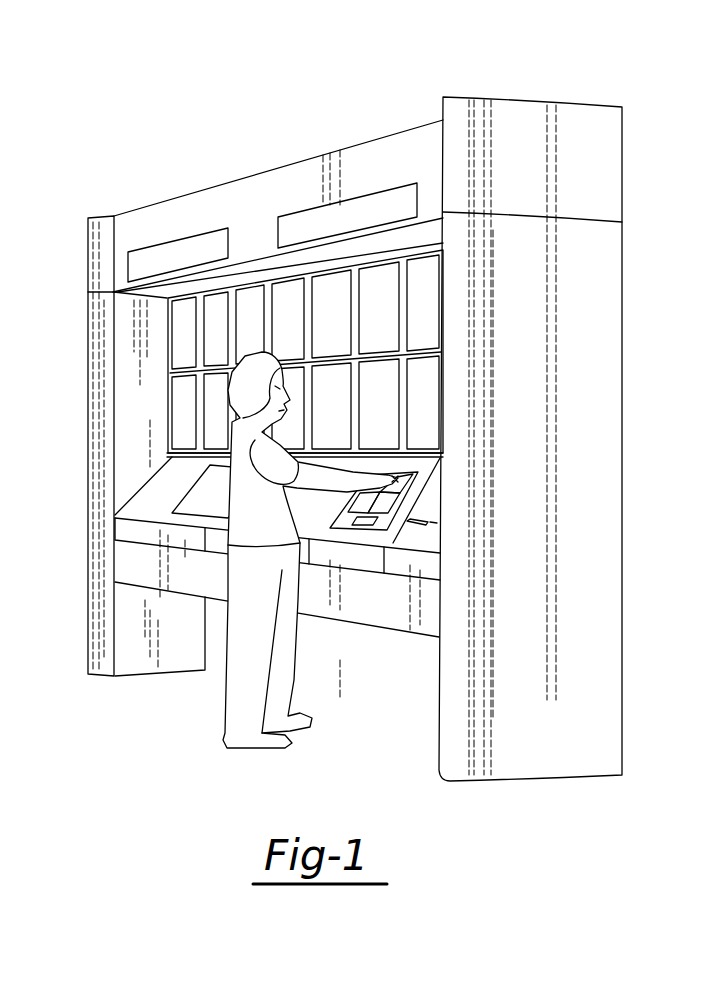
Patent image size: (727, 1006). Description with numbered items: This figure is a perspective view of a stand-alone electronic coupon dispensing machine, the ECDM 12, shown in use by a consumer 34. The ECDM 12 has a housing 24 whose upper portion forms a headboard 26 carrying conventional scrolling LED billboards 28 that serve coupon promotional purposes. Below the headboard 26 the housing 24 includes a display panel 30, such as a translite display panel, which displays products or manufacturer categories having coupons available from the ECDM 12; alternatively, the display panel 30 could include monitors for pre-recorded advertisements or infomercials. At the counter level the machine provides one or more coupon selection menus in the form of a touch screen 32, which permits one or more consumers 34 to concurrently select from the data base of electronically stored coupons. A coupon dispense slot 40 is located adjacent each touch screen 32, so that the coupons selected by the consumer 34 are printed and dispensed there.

The electronic coupon dispensing machine 12 is at (105, 227).
The housing 24 is at (323, 637).
The headboard 26 is at (344, 164).
The scrolling LED billboards 28 is at (216, 240).
The display panel 30 is at (177, 423).
The touch screen 32 is at (380, 528).
The consumer 34 is at (242, 703).
The coupon dispense slot 40 is at (435, 520).